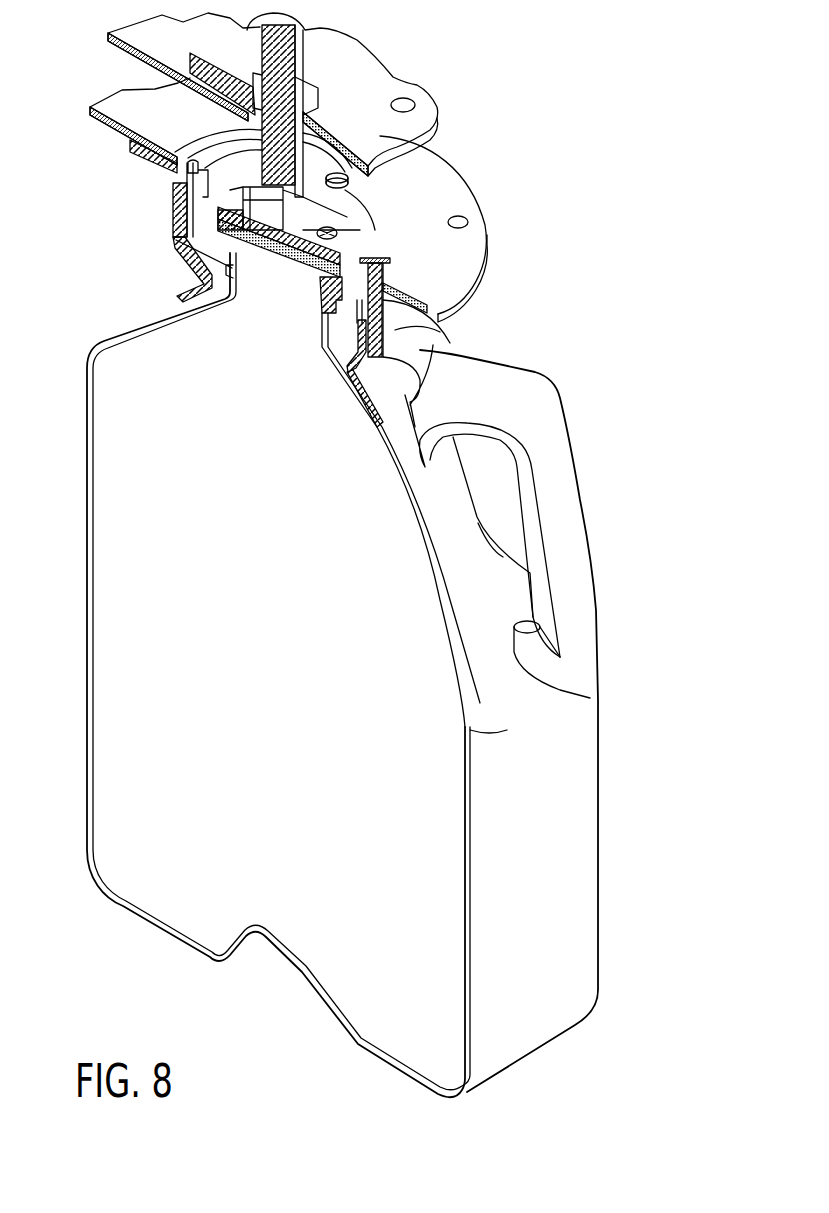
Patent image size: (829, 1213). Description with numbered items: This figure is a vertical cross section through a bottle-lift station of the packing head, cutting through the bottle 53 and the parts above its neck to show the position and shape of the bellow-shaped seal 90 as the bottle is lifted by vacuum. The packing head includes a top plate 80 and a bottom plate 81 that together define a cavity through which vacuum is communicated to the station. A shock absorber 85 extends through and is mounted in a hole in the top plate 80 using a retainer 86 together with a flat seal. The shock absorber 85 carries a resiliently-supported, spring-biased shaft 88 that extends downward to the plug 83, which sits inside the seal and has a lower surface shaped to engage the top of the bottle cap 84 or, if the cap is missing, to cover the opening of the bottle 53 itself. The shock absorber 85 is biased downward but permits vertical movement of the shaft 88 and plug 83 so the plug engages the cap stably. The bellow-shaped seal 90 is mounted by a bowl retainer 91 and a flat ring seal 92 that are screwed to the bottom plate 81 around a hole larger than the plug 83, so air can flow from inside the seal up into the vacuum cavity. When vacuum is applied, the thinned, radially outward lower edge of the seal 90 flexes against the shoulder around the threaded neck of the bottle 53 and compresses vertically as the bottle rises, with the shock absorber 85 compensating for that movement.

The bottle 53 is at (87, 513).
The top plate 80 is at (176, 50).
The bottom plate 81 is at (188, 125).
The plug 83 is at (350, 217).
The bottle cap 84 is at (273, 262).
The shock absorber 85 is at (303, 56).
The retainer 86 is at (375, 104).
The shaft 88 is at (300, 237).
The bellow-shaped seal 90 is at (200, 272).
The bowl retainer 91 is at (177, 209).
The flat ring seal 92 is at (440, 165).